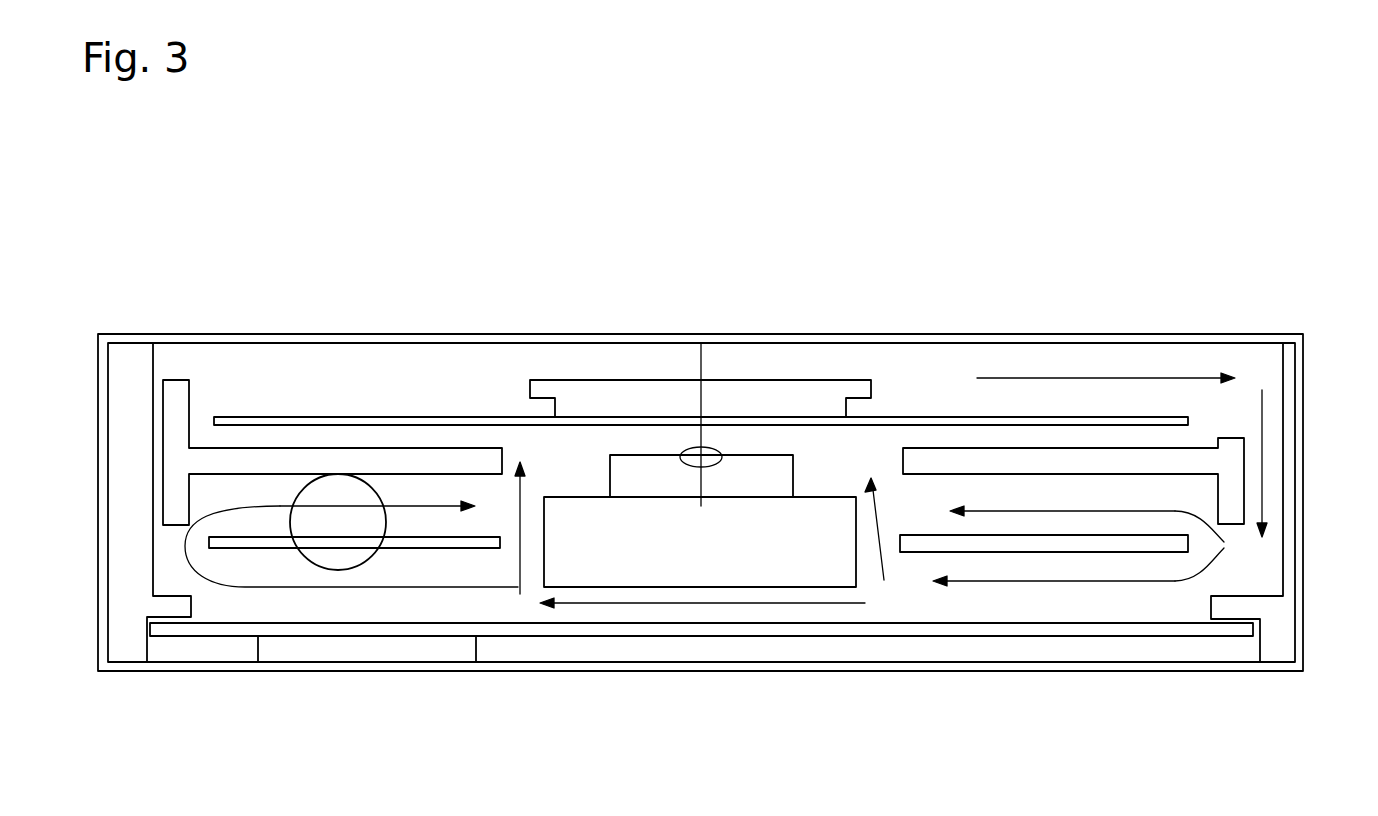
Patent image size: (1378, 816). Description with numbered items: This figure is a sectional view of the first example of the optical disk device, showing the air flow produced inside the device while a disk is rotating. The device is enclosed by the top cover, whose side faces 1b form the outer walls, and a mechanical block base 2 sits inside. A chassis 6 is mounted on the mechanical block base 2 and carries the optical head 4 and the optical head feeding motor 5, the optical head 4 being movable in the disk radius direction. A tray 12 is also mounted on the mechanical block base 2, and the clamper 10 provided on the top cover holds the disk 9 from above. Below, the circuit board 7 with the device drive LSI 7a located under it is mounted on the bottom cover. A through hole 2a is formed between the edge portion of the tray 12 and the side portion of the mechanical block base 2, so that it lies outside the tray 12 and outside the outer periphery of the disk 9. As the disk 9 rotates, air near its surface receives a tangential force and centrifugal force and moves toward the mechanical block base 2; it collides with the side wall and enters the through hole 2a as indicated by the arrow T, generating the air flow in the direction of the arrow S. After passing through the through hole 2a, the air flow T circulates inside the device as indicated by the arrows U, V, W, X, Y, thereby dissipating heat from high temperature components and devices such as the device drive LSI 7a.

The side face 1b is at (98, 615).
The mechanical block base 2 is at (108, 378).
The through hole 2a is at (1290, 504).
The optical head 4 is at (651, 585).
The optical head feeding motor 5 is at (345, 566).
The chassis 6 is at (1045, 552).
The circuit board 7 is at (548, 633).
The device drive LSI 7a is at (447, 659).
The disk 9 is at (903, 417).
The clamper 10 is at (745, 380).
The tray 12 is at (1050, 448).
The air flow S is at (1152, 378).
The air flow T is at (1247, 420).
The air flow U is at (985, 582).
The air flow V is at (1135, 512).
The air flow W is at (753, 606).
The air flow X is at (242, 586).
The air flow Y is at (512, 598).